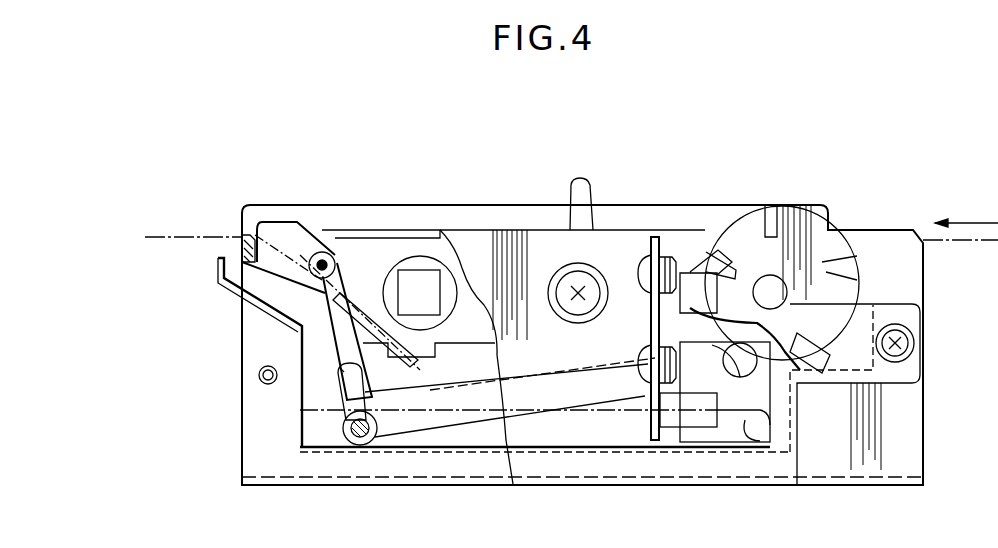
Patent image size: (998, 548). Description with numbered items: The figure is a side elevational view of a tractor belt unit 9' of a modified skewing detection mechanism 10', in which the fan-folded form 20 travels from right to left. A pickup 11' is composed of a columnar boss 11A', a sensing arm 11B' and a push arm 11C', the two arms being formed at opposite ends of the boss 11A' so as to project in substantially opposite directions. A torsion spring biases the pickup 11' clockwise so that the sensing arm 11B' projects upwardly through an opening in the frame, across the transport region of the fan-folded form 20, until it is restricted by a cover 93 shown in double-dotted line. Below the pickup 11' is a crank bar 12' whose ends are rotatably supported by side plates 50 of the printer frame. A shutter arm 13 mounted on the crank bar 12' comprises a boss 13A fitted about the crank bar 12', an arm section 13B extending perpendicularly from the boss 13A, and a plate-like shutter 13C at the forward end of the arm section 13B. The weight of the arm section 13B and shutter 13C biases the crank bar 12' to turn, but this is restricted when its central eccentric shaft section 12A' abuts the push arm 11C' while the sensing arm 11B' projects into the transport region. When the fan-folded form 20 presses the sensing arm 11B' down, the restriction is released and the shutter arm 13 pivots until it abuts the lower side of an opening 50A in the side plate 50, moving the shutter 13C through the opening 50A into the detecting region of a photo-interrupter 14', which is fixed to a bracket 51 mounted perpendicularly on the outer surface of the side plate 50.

The tractor belt unit 9' is at (582, 298).
The fan-folded form 20 is at (193, 237).
The cover 93 is at (478, 204).
The skewing detection mechanism 10' is at (622, 344).
The side plate 50 is at (543, 245).
The bracket 51 is at (647, 270).
The shutter 13C is at (727, 380).
The slide bar 13 is at (430, 440).
The arm section 13B is at (483, 427).
The photo-interrupter 14' is at (705, 465).
The opening 50A is at (757, 400).
The pickup 11' is at (260, 352).
The sensing arm 11B' is at (340, 229).
The columnar boss 11A' is at (339, 221).
The push arm 11C' is at (366, 282).
The crank bar 12' is at (321, 442).
The eccentric shaft section 12A' is at (268, 392).
The boss 13A is at (345, 445).